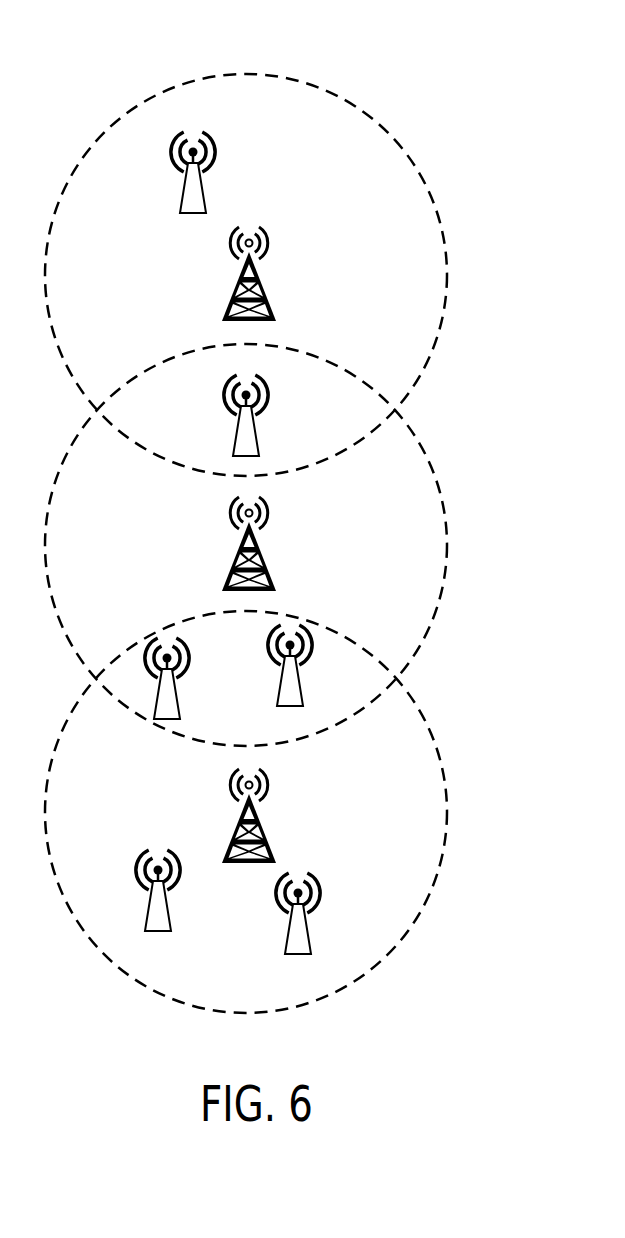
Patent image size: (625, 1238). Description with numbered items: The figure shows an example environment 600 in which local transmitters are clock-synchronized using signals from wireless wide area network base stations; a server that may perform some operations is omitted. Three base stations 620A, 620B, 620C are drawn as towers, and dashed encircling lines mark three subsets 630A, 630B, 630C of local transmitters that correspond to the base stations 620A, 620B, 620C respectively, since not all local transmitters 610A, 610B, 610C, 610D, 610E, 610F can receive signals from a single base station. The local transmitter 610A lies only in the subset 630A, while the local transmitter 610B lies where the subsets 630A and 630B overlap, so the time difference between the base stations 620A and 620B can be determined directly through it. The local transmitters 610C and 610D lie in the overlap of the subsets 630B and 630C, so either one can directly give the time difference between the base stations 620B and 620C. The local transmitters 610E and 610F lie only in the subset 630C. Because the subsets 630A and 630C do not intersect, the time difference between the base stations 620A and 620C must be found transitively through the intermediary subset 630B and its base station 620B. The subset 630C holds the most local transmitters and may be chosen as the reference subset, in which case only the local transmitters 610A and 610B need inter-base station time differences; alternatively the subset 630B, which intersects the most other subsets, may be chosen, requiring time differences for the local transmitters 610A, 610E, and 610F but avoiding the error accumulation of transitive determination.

The example environment 600 is at (432, 45).
The local transmitter 610A is at (195, 199).
The local transmitter 610B is at (250, 442).
The local transmitter 610C is at (170, 707).
The local transmitter 610D is at (293, 695).
The local transmitter 610E is at (162, 919).
The local transmitter 610F is at (302, 942).
The base station 620A is at (267, 295).
The base station 620B is at (270, 567).
The base station 620C is at (268, 834).
The subset 630A is at (388, 137).
The subset 630B is at (433, 473).
The subset 630C is at (438, 757).